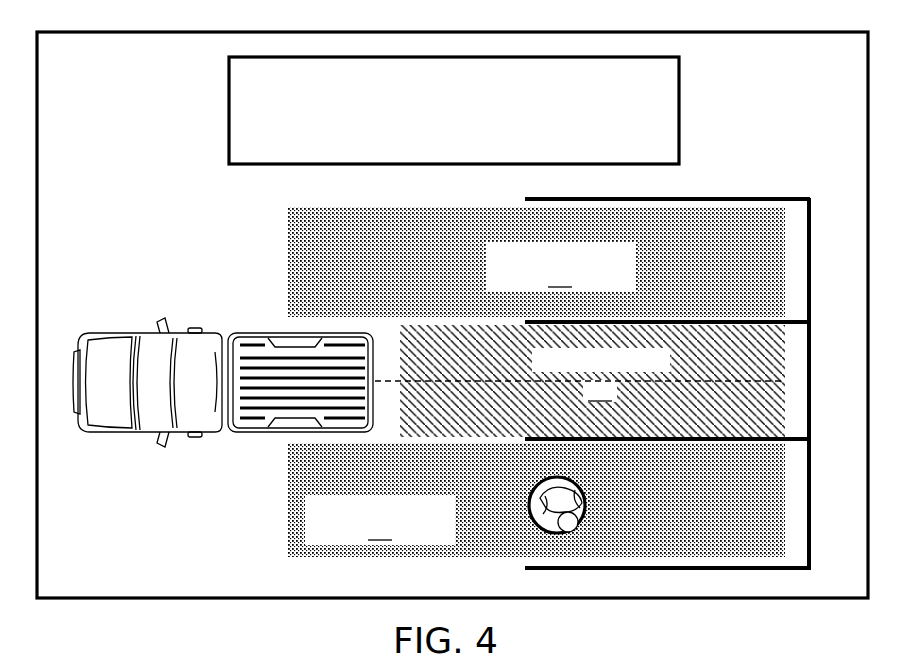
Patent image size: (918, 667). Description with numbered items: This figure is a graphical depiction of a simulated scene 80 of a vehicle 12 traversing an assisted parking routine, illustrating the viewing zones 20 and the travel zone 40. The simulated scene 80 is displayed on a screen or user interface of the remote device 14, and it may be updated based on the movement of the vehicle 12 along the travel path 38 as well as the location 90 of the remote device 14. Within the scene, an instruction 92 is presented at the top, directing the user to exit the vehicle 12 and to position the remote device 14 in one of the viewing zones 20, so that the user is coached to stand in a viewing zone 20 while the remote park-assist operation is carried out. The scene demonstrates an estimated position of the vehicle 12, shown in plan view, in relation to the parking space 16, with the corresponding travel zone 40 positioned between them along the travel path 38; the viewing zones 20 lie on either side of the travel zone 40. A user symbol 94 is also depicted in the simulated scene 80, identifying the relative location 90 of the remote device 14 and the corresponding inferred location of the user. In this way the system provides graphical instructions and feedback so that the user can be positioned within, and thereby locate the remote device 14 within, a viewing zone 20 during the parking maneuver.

The simulated scene 80 is at (118, 46).
The instruction 92 is at (226, 104).
The vehicle 12 is at (150, 294).
The parking space 16 is at (766, 274).
The viewing zone 20 is at (536, 382).
The travel zone 40 is at (592, 381).
The travel path 38 is at (453, 380).
The remote device 14 is at (542, 536).
The user symbol 94 is at (564, 541).
The location 90 is at (594, 516).